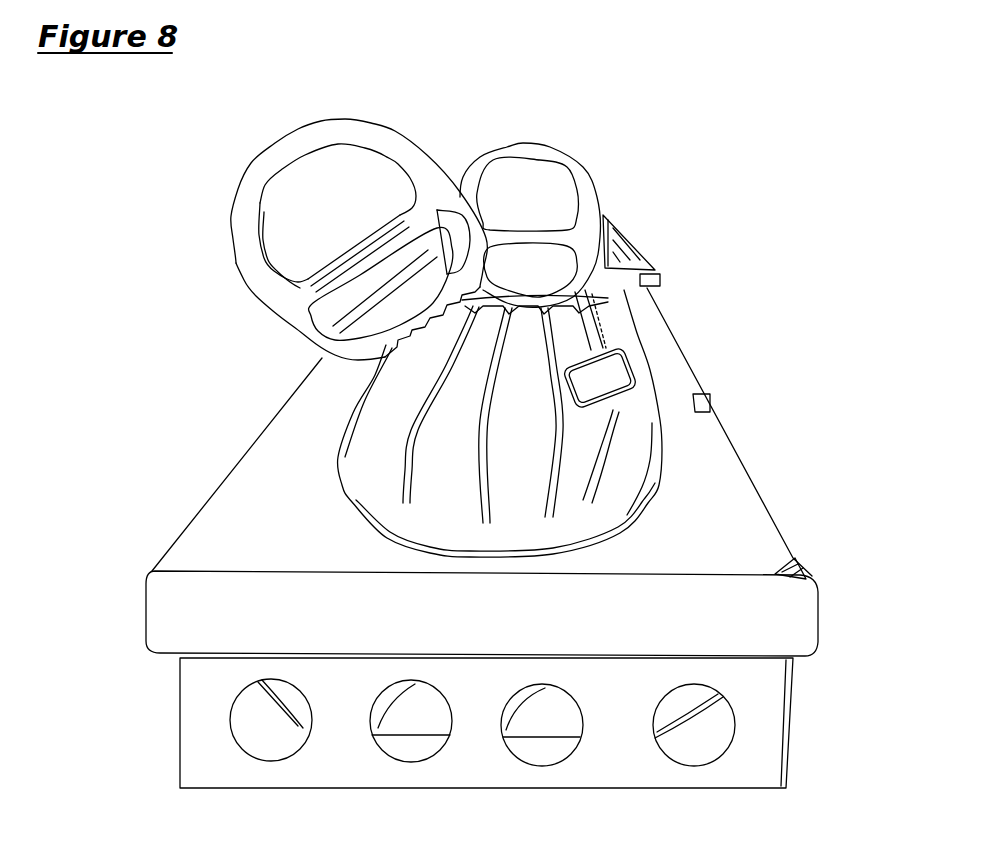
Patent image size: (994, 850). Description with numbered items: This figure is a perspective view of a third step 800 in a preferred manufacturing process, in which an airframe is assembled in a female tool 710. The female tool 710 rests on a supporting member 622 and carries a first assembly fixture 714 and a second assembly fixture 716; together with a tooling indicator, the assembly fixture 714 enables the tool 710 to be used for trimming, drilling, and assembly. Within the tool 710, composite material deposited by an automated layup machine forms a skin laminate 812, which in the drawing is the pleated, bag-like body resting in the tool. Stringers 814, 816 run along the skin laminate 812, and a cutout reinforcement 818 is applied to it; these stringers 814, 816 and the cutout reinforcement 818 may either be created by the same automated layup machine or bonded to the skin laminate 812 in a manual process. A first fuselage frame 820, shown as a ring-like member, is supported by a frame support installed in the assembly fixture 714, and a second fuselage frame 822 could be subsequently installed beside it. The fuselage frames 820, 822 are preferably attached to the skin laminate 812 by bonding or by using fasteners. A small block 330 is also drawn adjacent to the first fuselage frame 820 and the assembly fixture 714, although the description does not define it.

The third step 800 is at (158, 219).
The first fuselage frame 820 is at (557, 150).
The second fuselage frame 822 is at (236, 253).
The latch block 330 is at (625, 228).
The first assembly fixture 714 is at (660, 278).
The second assembly fixture 716 is at (710, 406).
The cutout reinforcement 818 is at (648, 400).
The skin laminate 812 is at (657, 502).
The stringer 814 is at (408, 427).
The stringer 816 is at (482, 500).
The female tool 710 is at (141, 612).
The supporting member 622 is at (178, 765).